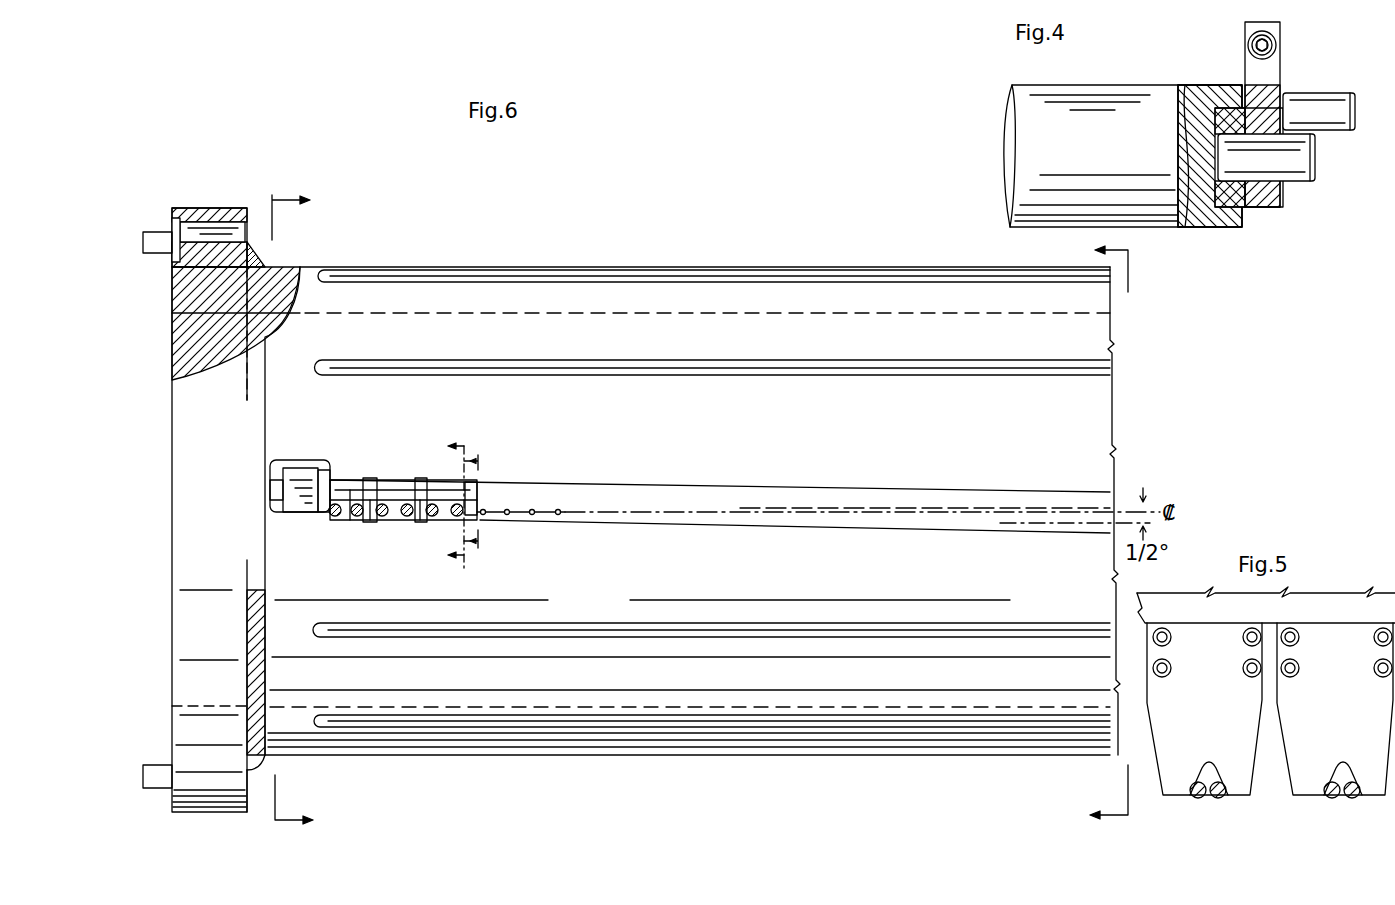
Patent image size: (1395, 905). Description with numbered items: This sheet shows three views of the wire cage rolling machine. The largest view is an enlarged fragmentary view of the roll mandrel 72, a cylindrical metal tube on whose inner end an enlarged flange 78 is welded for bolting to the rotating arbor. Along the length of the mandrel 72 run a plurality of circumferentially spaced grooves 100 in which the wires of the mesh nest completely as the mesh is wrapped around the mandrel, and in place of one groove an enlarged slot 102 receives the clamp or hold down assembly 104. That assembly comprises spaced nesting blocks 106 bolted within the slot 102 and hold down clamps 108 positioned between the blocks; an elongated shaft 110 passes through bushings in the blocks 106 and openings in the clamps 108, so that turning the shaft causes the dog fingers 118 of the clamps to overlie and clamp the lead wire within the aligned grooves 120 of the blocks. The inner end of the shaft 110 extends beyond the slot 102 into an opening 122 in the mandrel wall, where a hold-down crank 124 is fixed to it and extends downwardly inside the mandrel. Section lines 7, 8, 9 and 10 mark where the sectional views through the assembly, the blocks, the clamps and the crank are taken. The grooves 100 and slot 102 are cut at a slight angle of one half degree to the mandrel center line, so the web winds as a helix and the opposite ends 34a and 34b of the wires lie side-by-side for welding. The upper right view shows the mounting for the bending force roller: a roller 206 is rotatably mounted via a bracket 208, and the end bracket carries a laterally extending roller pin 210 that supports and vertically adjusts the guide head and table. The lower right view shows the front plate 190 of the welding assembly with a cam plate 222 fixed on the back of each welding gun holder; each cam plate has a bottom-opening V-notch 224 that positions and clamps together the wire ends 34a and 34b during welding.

In FIG. 6, the enlarged flange 78 is at (208, 208).
In FIG. 6, the mandrel 72 is at (790, 752).
In FIG. 6, the grooves 100 is at (848, 372).
In FIG. 6, the enlarged slot 102 is at (735, 488).
In FIG. 6, the clamp or hold down assembly 104 is at (416, 478).
In FIG. 6, the nesting blocks 106 is at (445, 482).
In FIG. 6, the hold down clamps 108 is at (418, 505).
In FIG. 6, the elongated shaft 110 is at (325, 470).
In FIG. 6, the dog fingers 118 is at (477, 492).
In FIG. 6, the aligned grooves 120 is at (352, 492).
In FIG. 6, the opening 122 is at (278, 460).
In FIG. 6, the hold-down crank 124 is at (292, 512).
In FIG. 6, the section line 7 is at (1117, 536).
In FIG. 6, the section line 8 is at (463, 503).
In FIG. 6, the section line 9 is at (479, 502).
In FIG. 6, the section line 10 is at (279, 512).
In FIG. 4, the rollers 206 is at (1166, 93).
In FIG. 4, the brackets 208 is at (1278, 197).
In FIG. 4, the roller pin 210 is at (1328, 95).
In FIG. 5, the front plate 190 is at (1266, 593).
In FIG. 5, the cam plate 222 is at (1270, 709).
In FIG. 5, the V-notch 224 is at (1210, 768).
In FIG. 5, the wire end 34a is at (1222, 800).
In FIG. 5, the wire end 34b is at (1197, 800).